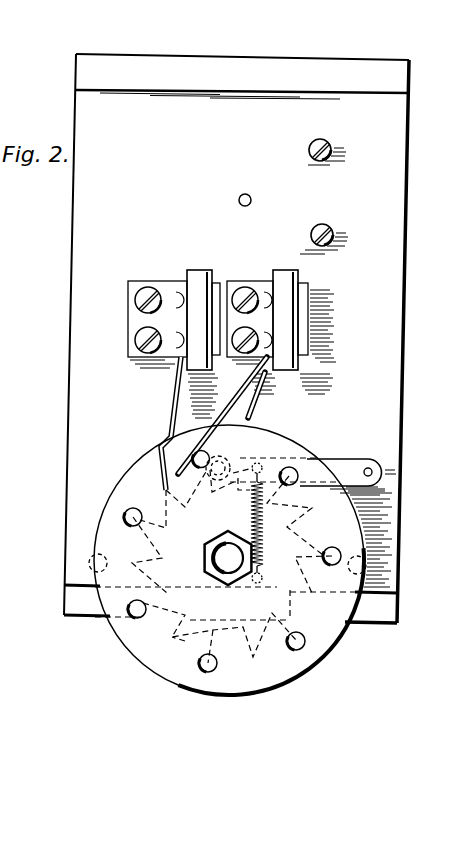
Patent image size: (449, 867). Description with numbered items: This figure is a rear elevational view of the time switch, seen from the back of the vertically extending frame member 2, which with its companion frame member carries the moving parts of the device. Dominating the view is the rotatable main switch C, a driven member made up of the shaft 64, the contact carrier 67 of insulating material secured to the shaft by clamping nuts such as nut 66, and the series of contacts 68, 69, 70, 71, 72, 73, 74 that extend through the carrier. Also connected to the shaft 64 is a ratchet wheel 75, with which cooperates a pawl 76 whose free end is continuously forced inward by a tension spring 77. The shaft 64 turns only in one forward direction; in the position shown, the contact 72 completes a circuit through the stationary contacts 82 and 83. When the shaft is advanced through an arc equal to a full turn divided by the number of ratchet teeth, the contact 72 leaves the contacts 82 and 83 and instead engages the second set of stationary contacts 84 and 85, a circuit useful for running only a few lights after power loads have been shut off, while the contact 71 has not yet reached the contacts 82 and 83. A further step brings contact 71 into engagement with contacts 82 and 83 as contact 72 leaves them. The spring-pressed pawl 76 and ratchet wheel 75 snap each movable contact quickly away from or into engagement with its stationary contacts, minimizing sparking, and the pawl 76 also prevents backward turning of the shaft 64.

The frame member 2 is at (398, 353).
The rotatable main switch C is at (362, 531).
The shaft 64 is at (226, 553).
The clamping nut 66 is at (211, 570).
The contact carrier 67 is at (128, 645).
The contact 68 is at (207, 672).
The contact 69 is at (297, 650).
The contact 70 is at (332, 566).
The contact 71 is at (295, 483).
The contact 72 is at (209, 456).
The contact 73 is at (127, 514).
The contact 74 is at (131, 616).
The ratchet wheel 75 is at (185, 641).
The pawl 76 is at (281, 461).
The tension spring 77 is at (248, 511).
The stationary contact 82 is at (262, 422).
The stationary contact 83 is at (298, 383).
The stationary contact 84 is at (164, 425).
The stationary contact 85 is at (168, 404).